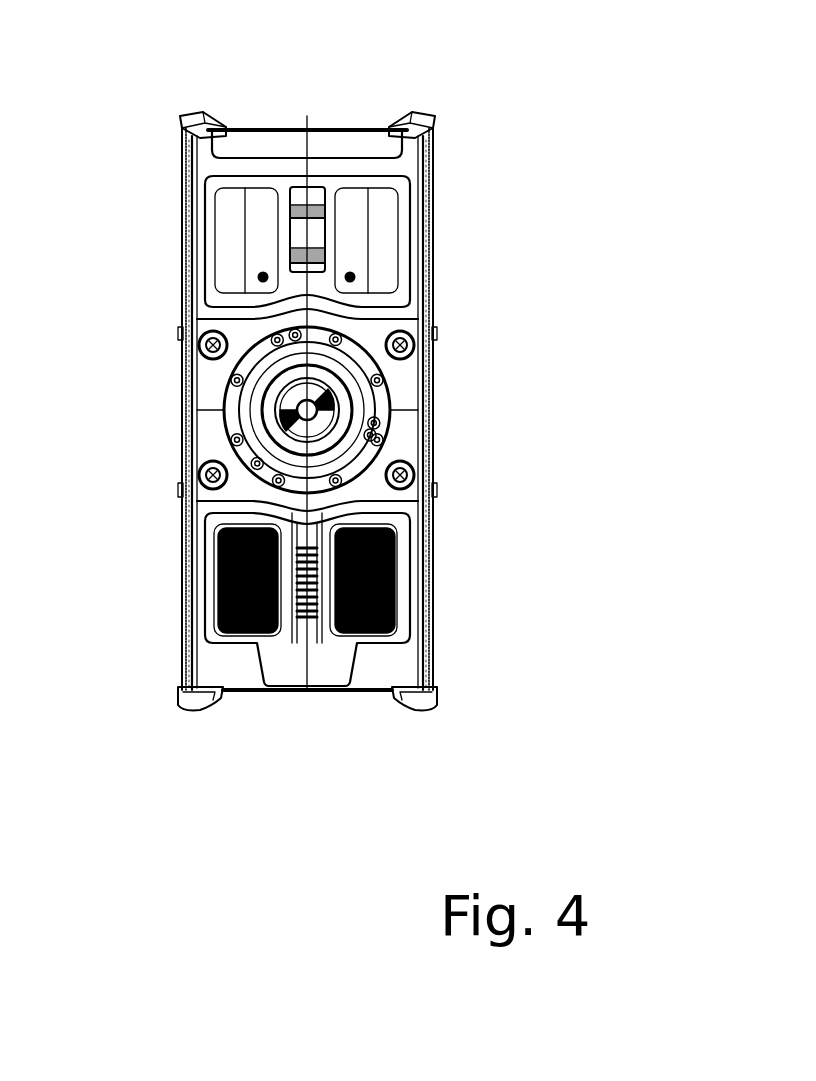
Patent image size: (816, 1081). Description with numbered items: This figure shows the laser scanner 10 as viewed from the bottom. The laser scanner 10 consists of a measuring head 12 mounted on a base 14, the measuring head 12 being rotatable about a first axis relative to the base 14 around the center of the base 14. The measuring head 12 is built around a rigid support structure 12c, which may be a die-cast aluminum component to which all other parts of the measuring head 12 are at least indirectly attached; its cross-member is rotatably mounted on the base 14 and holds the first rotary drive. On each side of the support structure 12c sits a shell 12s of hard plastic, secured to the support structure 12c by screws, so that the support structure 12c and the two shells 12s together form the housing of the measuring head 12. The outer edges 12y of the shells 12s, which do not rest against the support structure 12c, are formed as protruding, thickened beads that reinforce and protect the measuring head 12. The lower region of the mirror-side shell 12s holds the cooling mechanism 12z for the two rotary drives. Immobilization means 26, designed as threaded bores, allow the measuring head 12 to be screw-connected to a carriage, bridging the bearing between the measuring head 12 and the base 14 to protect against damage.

The laser scanner 10 is at (540, 223).
The measuring head 12 is at (370, 693).
The support structure 12c is at (203, 432).
The shell 12s is at (432, 136).
The outer edges 12y is at (181, 133).
The cooling mechanism 12z is at (390, 581).
The base 14 is at (353, 430).
The immobilization means 26 is at (203, 340).